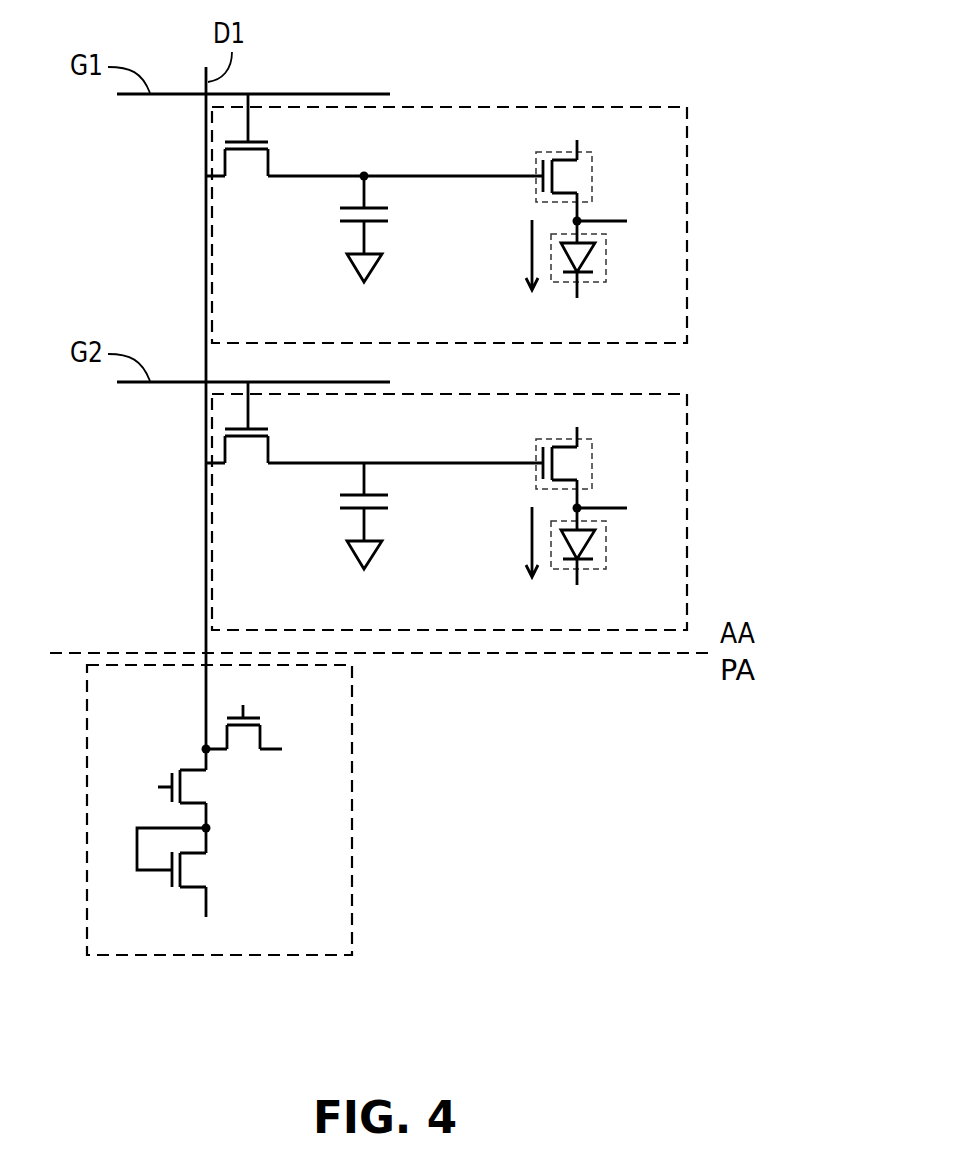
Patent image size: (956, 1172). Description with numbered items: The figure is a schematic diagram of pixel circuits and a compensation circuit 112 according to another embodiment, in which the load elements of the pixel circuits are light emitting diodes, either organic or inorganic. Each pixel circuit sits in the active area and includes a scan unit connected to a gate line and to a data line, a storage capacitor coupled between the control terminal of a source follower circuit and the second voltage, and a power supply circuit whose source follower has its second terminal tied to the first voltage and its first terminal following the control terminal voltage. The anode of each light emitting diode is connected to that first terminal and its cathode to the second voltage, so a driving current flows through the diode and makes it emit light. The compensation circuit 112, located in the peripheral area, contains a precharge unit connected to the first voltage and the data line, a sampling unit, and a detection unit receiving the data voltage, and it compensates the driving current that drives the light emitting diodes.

The compensation circuit 112 is at (352, 830).